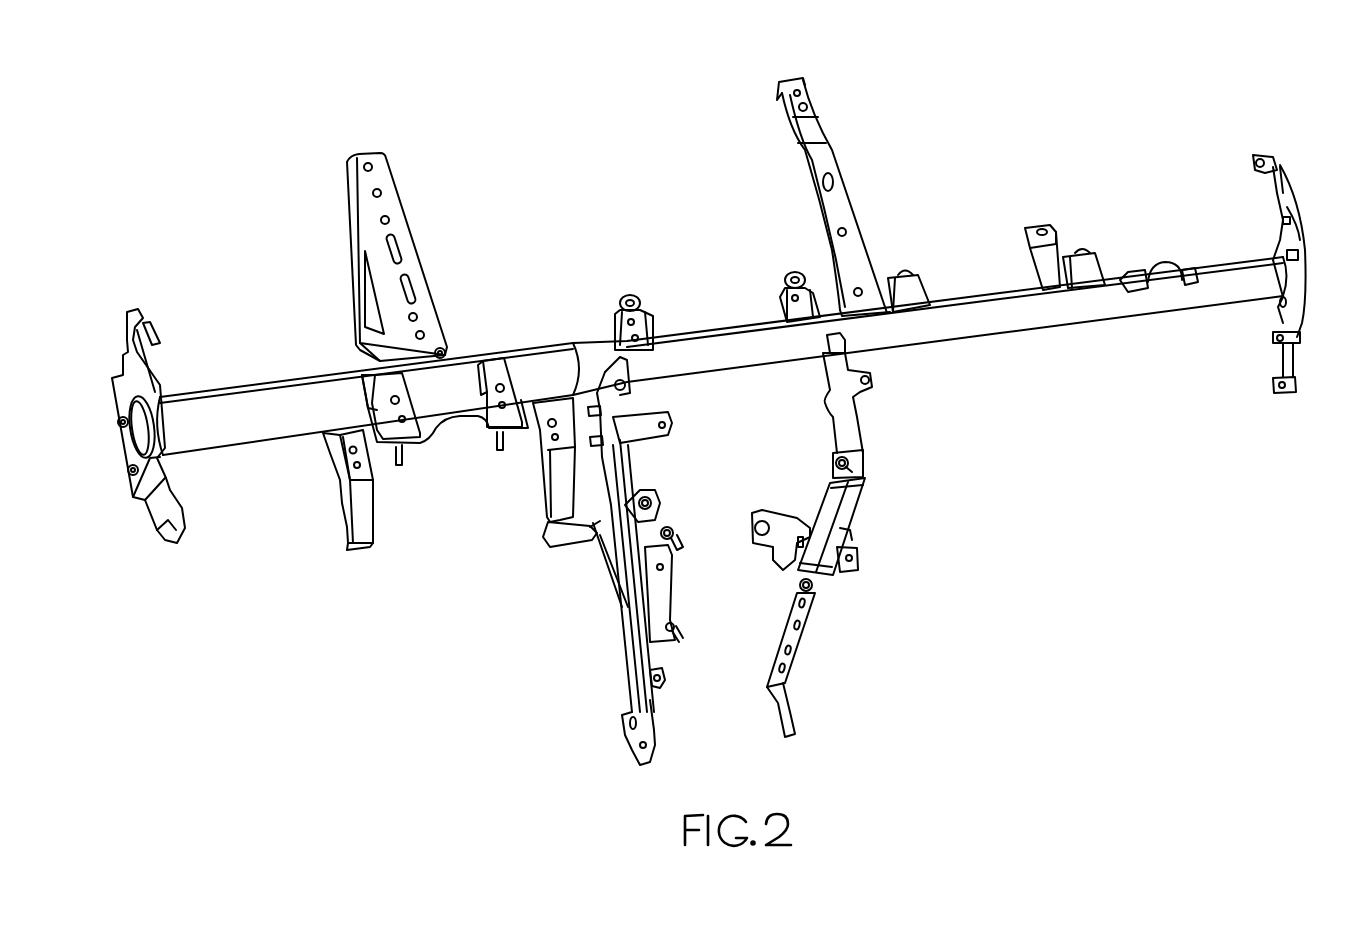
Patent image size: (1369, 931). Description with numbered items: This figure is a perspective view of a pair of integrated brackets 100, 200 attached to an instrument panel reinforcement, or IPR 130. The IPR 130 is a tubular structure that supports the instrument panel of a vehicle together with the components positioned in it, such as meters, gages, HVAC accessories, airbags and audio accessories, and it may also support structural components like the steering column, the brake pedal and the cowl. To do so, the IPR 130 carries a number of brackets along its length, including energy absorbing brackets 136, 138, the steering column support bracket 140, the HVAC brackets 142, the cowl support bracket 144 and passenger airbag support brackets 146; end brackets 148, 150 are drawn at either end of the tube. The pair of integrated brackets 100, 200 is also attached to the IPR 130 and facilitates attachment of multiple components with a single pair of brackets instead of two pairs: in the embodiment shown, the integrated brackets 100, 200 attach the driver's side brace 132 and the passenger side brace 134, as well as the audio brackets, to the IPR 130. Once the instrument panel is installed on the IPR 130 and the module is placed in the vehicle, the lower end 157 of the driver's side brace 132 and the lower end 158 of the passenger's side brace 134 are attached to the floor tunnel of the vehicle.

The integrated bracket 100 is at (680, 418).
The IPR 130 is at (506, 152).
The driver's side brace 132 is at (649, 561).
The passenger side brace 134 is at (812, 607).
The energy absorbing bracket 136 is at (346, 522).
The energy absorbing bracket 138 is at (549, 492).
The steering column support bracket 140 is at (345, 218).
The HVAC bracket 142 is at (605, 284).
The cowl support bracket 144 is at (815, 98).
The passenger airbag support bracket 146 is at (902, 270).
The left end bracket 148 is at (123, 462).
The right end bracket 150 is at (1300, 206).
The lower end of the driver's side brace 157 is at (623, 737).
The lower end of the passenger's side brace 158 is at (788, 718).
The integrated bracket 200 is at (860, 383).